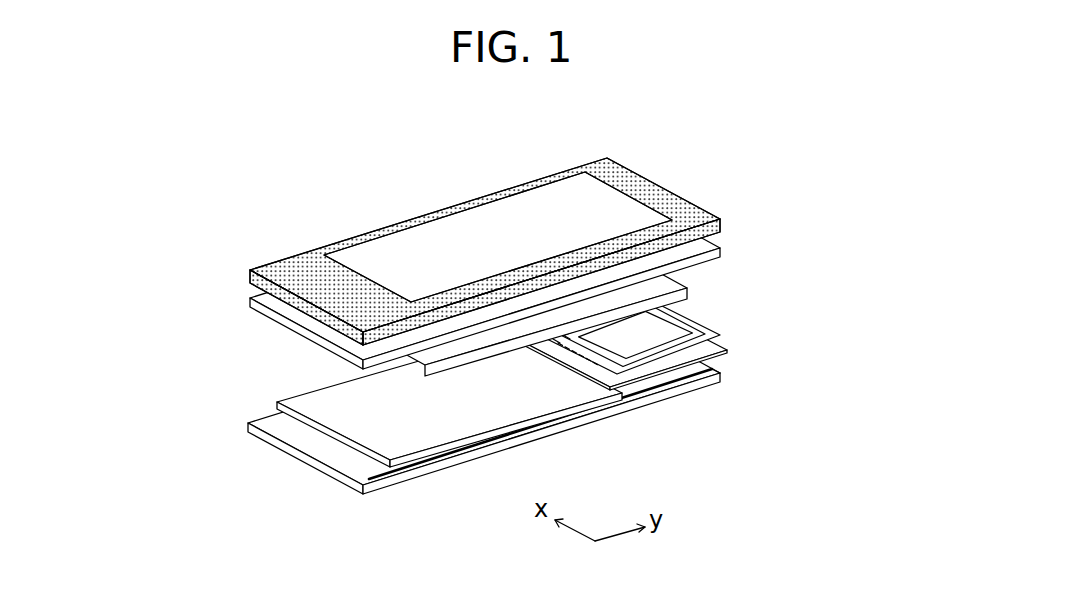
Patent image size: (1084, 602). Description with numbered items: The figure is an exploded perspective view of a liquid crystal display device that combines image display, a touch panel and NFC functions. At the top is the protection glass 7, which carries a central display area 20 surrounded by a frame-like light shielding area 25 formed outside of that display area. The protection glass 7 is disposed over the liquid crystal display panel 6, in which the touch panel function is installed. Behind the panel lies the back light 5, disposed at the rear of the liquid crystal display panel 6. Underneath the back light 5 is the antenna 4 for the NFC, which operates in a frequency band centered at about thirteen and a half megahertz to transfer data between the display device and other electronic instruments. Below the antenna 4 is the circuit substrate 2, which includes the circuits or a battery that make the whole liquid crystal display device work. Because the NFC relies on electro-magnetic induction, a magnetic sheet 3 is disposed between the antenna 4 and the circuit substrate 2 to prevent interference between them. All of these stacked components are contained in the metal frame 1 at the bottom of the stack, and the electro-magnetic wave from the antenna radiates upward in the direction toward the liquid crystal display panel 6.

The metal frame 1 is at (668, 390).
The circuit substrate 2 is at (582, 403).
The magnetic sheet 3 is at (707, 350).
The antenna 4 is at (707, 323).
The back light 5 is at (668, 280).
The liquid crystal display panel 6 is at (697, 247).
The protection glass 7 is at (515, 233).
The display area 20 is at (555, 222).
The light shielding area 25 is at (650, 188).